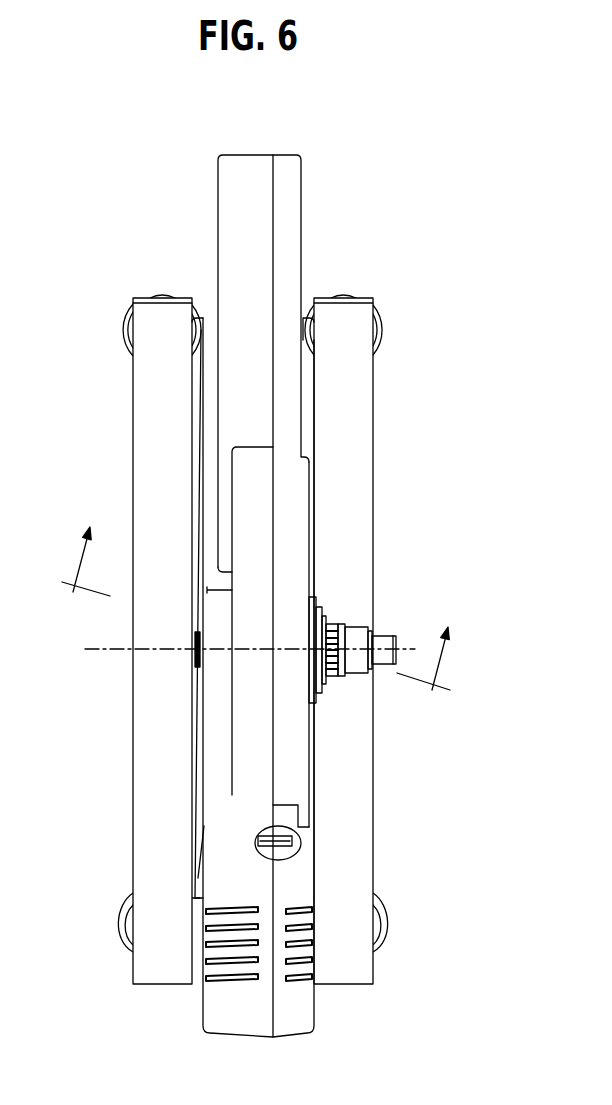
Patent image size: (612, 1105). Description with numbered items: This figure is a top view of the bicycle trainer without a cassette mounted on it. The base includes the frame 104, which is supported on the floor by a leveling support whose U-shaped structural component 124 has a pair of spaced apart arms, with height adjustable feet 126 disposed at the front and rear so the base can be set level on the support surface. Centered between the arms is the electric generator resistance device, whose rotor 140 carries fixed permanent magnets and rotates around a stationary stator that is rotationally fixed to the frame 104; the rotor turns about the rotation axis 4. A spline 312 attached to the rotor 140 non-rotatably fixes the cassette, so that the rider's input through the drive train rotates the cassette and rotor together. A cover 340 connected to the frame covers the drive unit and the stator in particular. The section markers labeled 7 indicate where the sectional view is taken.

The frame 104 is at (292, 219).
The U-shaped structural component 124 is at (357, 448).
The height adjustable feet 126 is at (127, 332).
The rotor 140 is at (300, 505).
The spline 312 is at (333, 625).
The cover 340 is at (222, 727).
The rotation axis 4 is at (411, 648).
The section line 7- 7 is at (258, 617).